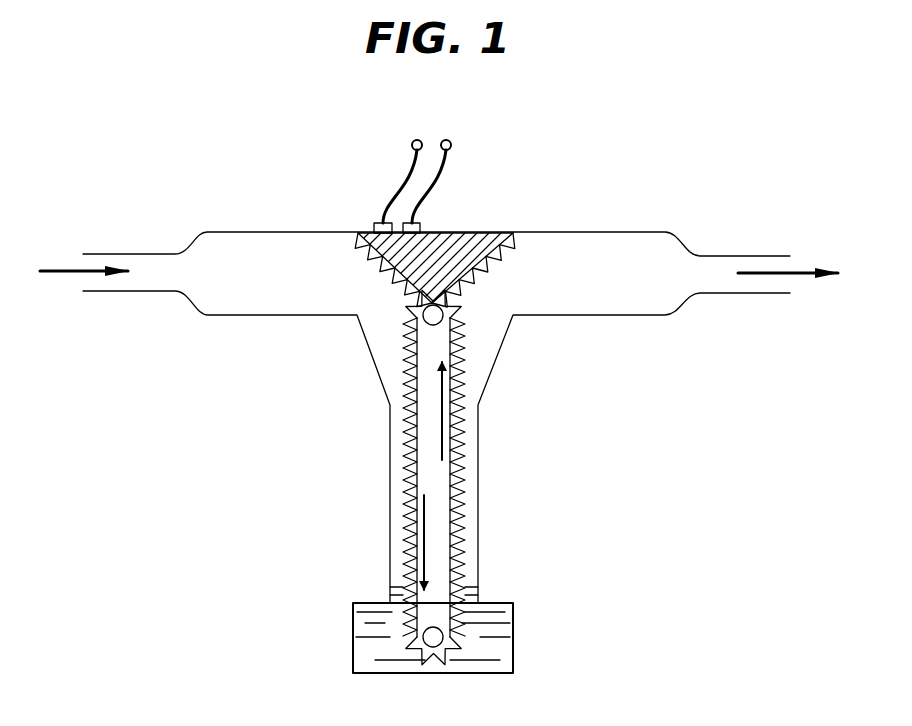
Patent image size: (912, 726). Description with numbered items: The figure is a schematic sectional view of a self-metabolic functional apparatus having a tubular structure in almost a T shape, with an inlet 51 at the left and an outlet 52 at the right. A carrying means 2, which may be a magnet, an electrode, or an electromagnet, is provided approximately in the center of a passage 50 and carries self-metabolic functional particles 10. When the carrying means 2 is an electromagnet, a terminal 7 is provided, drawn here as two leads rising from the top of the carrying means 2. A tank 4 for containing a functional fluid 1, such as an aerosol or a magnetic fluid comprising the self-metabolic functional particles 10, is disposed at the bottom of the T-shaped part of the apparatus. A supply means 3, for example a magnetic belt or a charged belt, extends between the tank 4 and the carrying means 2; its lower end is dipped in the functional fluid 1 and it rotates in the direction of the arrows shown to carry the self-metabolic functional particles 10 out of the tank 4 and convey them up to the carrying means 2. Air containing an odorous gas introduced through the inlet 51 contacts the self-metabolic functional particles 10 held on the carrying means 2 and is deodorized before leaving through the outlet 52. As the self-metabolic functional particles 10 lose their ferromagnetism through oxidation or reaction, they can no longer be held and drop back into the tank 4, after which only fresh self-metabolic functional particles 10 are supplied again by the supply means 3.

The functional fluid 1 is at (513, 643).
The carrying means 2 is at (474, 238).
The supply means 3 is at (455, 447).
The tank 4 is at (513, 617).
The terminal 7 is at (417, 160).
The self-metabolic functional particles 10 is at (350, 238).
The passage 50 is at (547, 243).
The inlet 51 is at (82, 251).
The outlet 52 is at (788, 253).